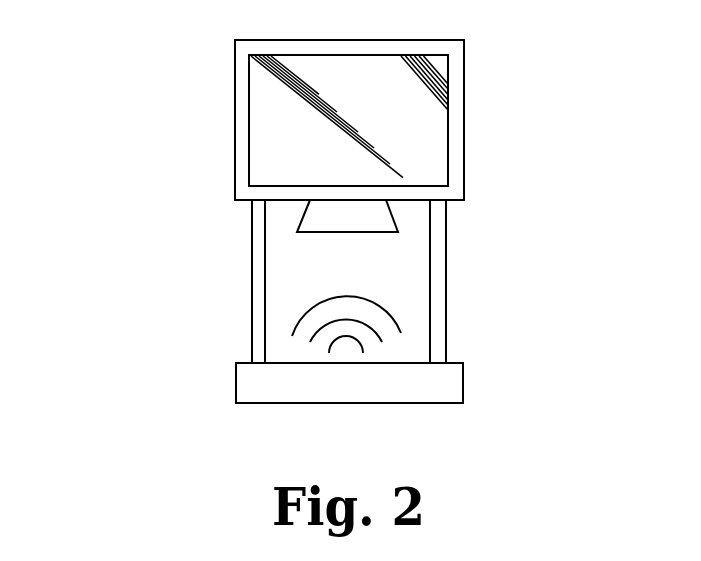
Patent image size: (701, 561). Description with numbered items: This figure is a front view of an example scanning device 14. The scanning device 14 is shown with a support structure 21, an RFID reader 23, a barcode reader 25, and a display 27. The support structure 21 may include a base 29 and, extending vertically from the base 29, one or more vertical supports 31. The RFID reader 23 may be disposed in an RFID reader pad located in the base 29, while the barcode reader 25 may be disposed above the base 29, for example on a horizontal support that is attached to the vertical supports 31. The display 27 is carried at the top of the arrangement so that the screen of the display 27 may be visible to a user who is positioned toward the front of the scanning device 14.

The scanning device 14 is at (176, 60).
The display 27 is at (473, 106).
The support structure 21 is at (456, 248).
The vertical supports 31 is at (456, 338).
The barcode reader 25 is at (305, 245).
The RFID reader 23 is at (292, 356).
The base 29 is at (375, 392).